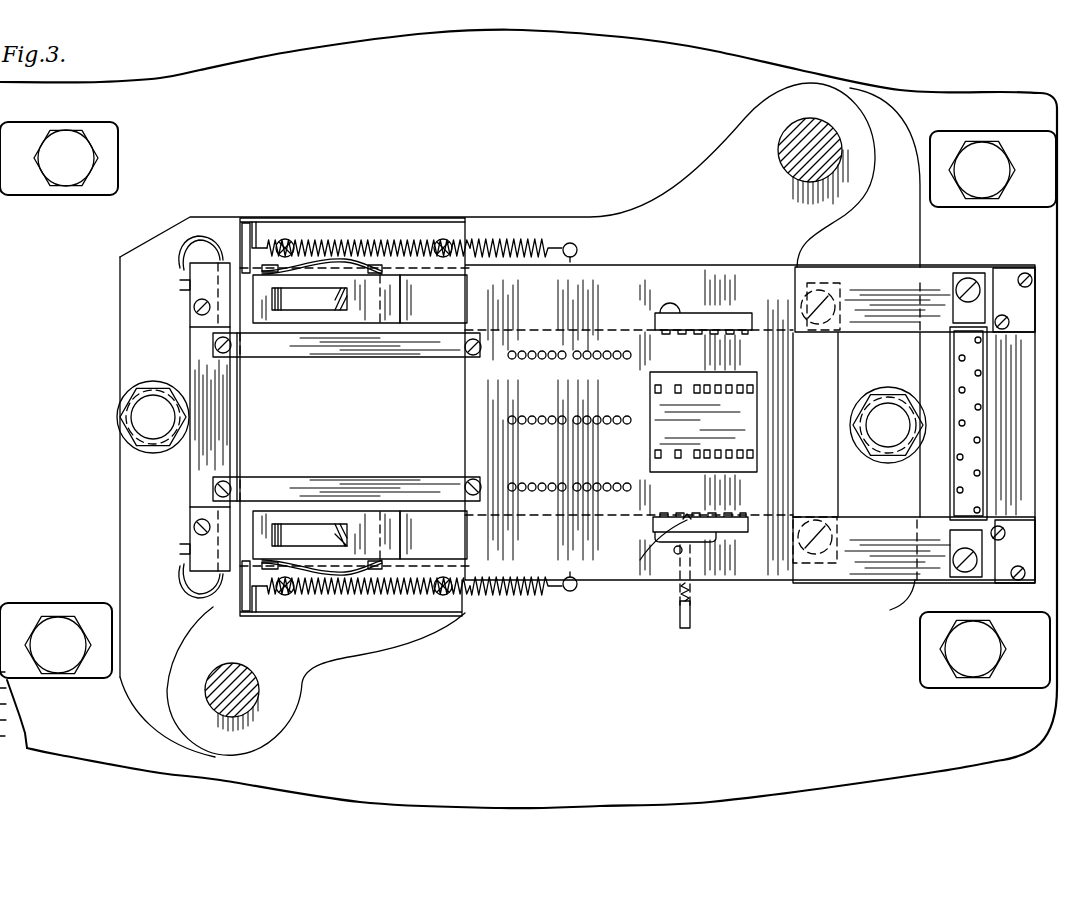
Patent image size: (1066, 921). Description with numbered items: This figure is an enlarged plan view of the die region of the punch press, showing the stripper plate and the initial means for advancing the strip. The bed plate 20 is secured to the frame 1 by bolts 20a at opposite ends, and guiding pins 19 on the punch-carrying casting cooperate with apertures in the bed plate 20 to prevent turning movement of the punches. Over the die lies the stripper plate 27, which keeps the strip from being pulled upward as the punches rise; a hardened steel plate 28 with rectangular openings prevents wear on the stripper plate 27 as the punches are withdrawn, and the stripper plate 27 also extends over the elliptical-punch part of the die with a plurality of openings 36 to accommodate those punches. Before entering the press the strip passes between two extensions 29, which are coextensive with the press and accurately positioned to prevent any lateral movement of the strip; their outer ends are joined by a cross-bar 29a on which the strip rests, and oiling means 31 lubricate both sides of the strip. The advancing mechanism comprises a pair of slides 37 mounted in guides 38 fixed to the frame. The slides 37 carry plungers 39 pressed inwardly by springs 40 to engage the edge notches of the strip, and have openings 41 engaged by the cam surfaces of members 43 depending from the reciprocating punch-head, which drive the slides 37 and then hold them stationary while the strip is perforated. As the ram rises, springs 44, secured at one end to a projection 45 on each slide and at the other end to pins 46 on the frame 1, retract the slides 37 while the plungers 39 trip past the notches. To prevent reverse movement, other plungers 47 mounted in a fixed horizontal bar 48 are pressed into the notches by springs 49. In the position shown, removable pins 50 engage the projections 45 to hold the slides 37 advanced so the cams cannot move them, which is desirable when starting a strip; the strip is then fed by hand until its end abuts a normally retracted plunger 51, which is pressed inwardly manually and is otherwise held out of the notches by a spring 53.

The frame 1 is at (863, 780).
The guiding pins 19 is at (800, 140).
The bed plate 20 is at (118, 540).
The bolts 20a is at (118, 432).
The stripper plate 27 is at (640, 272).
The hardened steel plate 28 is at (663, 467).
The extensions 29 is at (872, 270).
The cross-bar 29a is at (1012, 507).
The oiling means 31 is at (955, 477).
The openings 36 is at (542, 378).
The slides 37 is at (348, 325).
The guides 38 is at (437, 278).
The plungers 39 is at (392, 270).
The springs 40 is at (340, 258).
The openings 41 is at (290, 310).
The members 43 is at (318, 310).
The springs 44 is at (502, 245).
The projection 45 is at (247, 243).
The pins 46 is at (573, 245).
The plungers 47 is at (222, 260).
The fixed horizontal bar 48 is at (193, 468).
The springs 49 is at (187, 236).
The pins 50 is at (258, 262).
The plunger 51 is at (678, 530).
The spring 53 is at (680, 607).